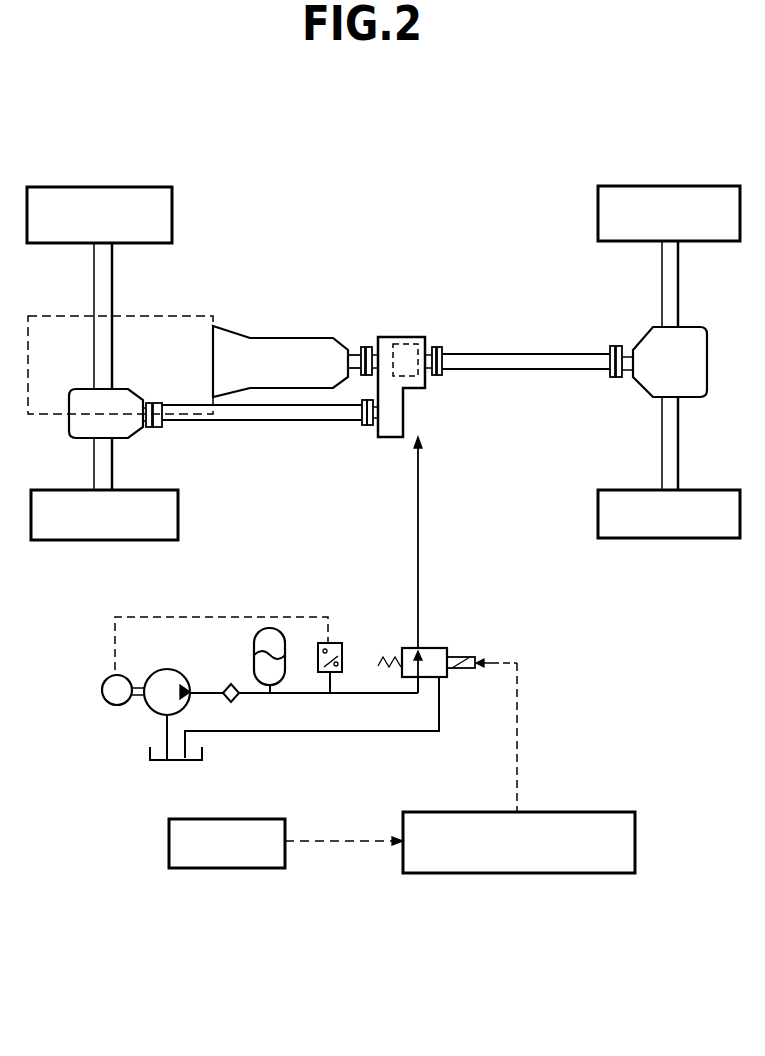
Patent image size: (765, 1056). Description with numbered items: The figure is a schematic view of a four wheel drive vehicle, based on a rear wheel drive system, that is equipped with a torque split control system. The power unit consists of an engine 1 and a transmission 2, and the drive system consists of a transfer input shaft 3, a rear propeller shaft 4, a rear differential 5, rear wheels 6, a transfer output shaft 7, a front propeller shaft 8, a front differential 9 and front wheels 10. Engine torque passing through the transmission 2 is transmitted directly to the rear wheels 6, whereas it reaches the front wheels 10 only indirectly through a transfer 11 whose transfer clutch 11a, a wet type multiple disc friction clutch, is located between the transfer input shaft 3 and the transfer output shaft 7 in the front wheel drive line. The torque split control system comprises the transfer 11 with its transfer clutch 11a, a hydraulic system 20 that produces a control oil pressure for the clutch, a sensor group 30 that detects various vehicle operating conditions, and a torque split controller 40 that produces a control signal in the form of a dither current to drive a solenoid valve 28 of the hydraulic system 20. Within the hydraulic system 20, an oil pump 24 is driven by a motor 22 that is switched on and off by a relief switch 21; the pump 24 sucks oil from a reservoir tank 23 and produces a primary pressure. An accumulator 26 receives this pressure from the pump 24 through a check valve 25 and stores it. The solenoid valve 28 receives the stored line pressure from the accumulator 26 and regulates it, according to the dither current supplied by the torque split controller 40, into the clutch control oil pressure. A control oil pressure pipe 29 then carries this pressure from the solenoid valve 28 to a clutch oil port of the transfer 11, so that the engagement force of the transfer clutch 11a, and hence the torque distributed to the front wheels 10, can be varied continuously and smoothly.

The engine 1 is at (176, 316).
The transmission 2 is at (262, 338).
The transfer input shaft 3 is at (372, 352).
The rear propeller shaft 4 is at (522, 355).
The rear differential 5 is at (695, 325).
The rear wheels 6 is at (705, 186).
The transfer output shaft 7 is at (372, 430).
The front propeller shaft 8 is at (290, 418).
The front differential 9 is at (70, 438).
The front wheels 10 is at (170, 208).
The transfer 11 is at (431, 340).
The transfer clutch 11a is at (414, 337).
The hydraulic system 20 is at (510, 629).
The relief switch 21 is at (340, 643).
The motor 22 is at (128, 672).
The reservoir tank 23 is at (170, 765).
The oil pump 24 is at (173, 668).
The check valve 25 is at (232, 683).
The accumulator 26 is at (275, 628).
The solenoid valve 28 is at (410, 648).
The control oil pressure pipe 29 is at (418, 470).
The sensor group 30 is at (245, 818).
The torque split controller 40 is at (452, 812).